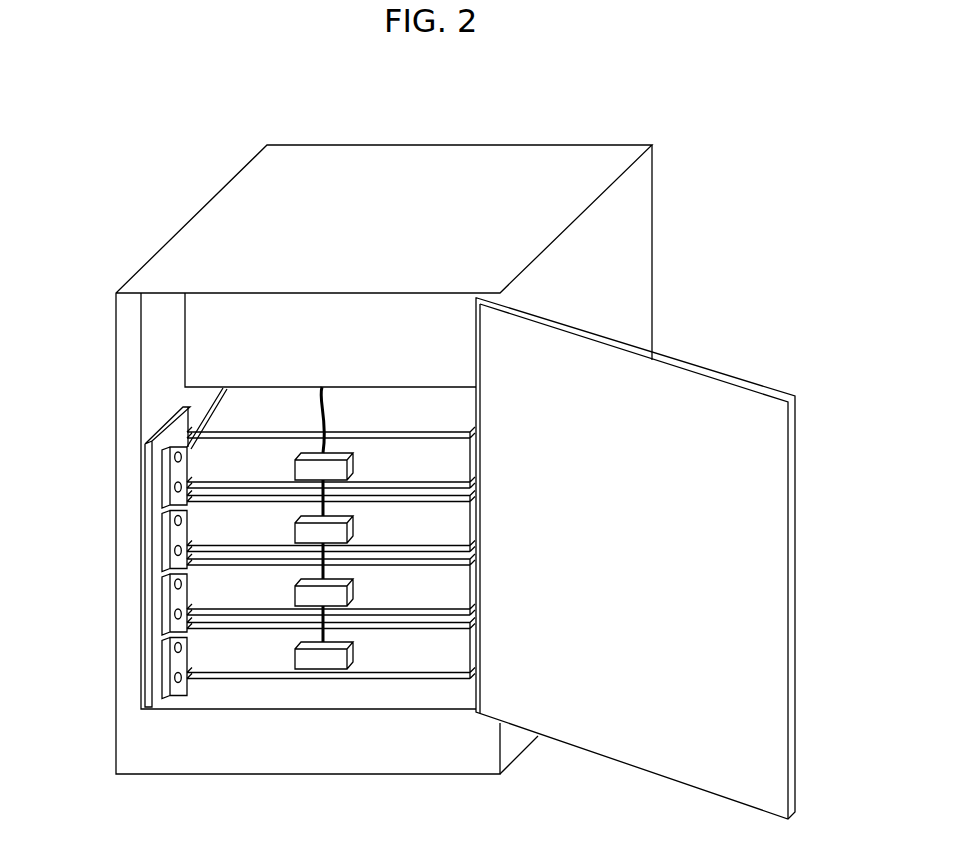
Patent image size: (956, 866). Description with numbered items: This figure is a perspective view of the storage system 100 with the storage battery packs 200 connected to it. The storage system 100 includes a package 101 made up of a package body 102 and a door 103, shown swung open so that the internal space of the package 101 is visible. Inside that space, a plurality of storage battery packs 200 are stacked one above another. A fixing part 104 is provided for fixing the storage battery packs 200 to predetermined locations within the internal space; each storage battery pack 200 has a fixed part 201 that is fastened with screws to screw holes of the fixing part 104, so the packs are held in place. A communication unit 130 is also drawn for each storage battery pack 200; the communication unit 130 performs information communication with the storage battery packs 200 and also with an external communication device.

The storage system 100 is at (700, 148).
The package 101 is at (697, 202).
The package body 102 is at (638, 258).
The door 103 is at (652, 350).
The fixing part 104 is at (156, 697).
The communication unit 130 is at (355, 462).
The storage battery pack 200 is at (476, 466).
The fixed part 201 is at (165, 468).